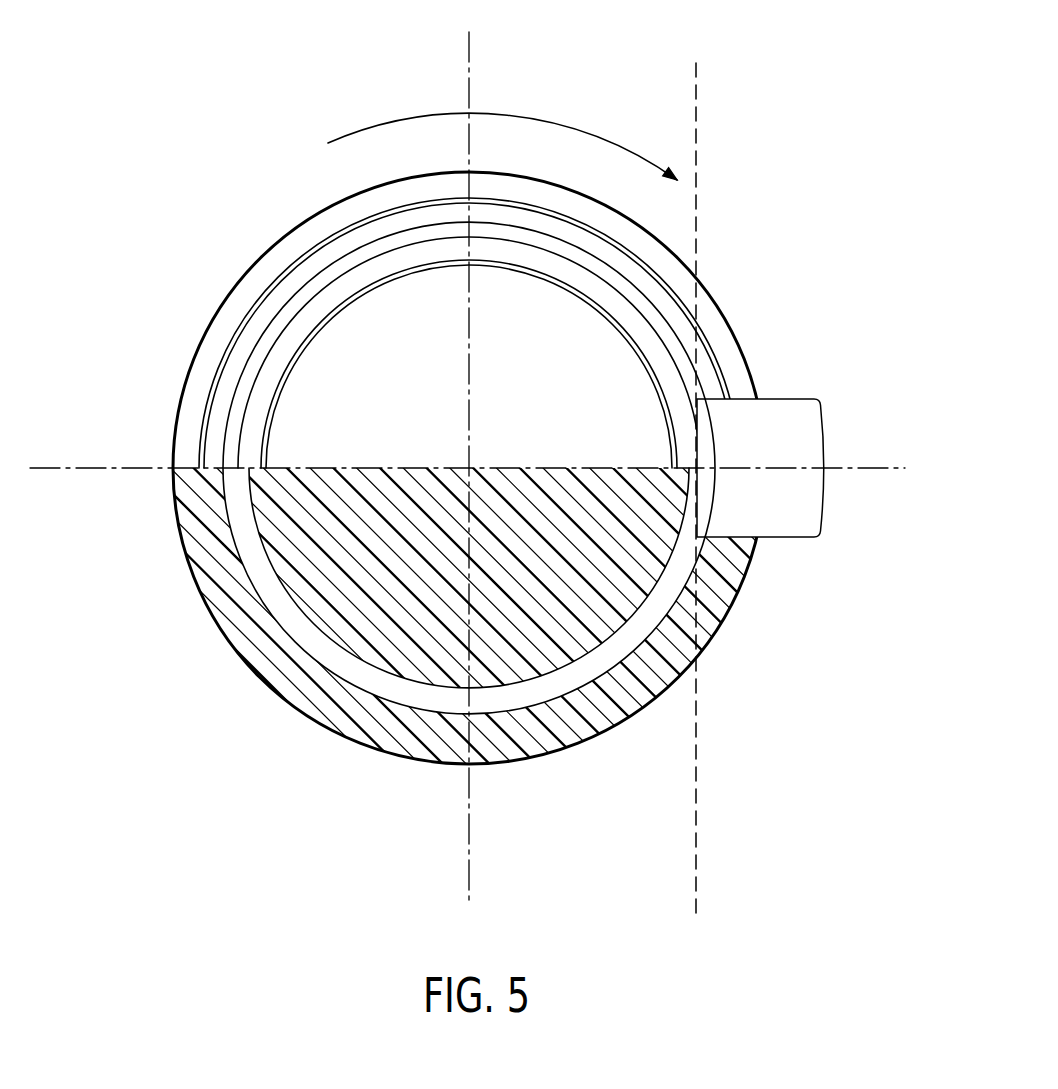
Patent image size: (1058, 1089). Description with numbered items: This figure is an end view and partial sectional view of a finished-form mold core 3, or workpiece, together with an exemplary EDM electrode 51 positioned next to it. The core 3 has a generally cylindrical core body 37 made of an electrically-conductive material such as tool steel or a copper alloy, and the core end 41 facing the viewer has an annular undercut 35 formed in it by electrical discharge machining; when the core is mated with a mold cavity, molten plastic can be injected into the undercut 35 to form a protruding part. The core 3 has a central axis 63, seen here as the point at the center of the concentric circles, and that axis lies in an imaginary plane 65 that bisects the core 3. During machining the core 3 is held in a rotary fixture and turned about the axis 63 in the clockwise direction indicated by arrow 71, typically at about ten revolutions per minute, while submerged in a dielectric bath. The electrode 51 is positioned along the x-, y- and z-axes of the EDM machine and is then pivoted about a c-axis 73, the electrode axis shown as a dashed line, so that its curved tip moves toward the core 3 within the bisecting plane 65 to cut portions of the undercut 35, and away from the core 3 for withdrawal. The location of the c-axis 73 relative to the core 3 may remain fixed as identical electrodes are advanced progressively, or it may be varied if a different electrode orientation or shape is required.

The core 3 is at (178, 270).
The annular undercut 35 is at (232, 437).
The core body 37 is at (265, 248).
The core end 41 is at (578, 327).
The EDM electrode 51 is at (823, 423).
The central axis 63 is at (469, 468).
The imaginary plane 65 is at (852, 470).
The arrow 71 is at (530, 117).
The c-axis 73 is at (697, 90).